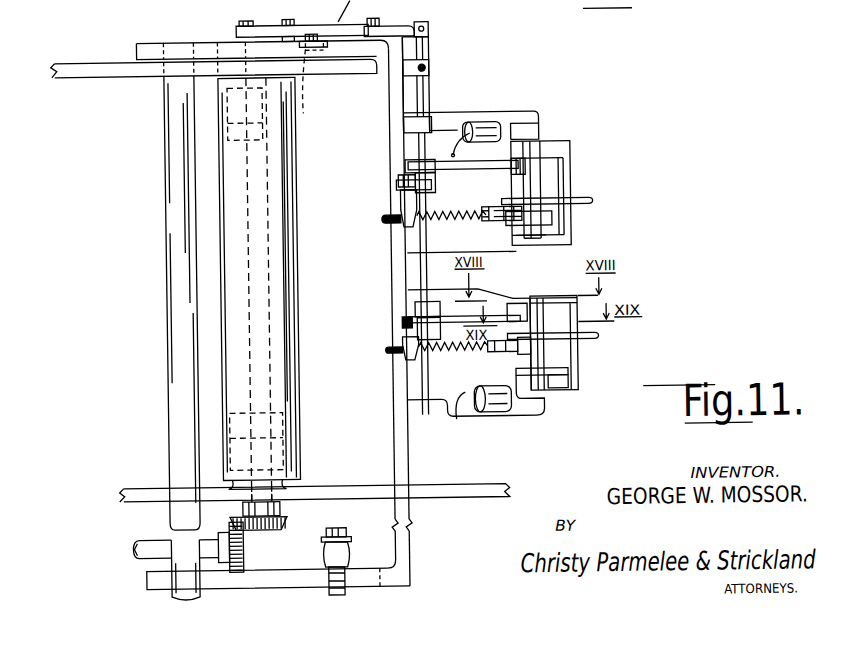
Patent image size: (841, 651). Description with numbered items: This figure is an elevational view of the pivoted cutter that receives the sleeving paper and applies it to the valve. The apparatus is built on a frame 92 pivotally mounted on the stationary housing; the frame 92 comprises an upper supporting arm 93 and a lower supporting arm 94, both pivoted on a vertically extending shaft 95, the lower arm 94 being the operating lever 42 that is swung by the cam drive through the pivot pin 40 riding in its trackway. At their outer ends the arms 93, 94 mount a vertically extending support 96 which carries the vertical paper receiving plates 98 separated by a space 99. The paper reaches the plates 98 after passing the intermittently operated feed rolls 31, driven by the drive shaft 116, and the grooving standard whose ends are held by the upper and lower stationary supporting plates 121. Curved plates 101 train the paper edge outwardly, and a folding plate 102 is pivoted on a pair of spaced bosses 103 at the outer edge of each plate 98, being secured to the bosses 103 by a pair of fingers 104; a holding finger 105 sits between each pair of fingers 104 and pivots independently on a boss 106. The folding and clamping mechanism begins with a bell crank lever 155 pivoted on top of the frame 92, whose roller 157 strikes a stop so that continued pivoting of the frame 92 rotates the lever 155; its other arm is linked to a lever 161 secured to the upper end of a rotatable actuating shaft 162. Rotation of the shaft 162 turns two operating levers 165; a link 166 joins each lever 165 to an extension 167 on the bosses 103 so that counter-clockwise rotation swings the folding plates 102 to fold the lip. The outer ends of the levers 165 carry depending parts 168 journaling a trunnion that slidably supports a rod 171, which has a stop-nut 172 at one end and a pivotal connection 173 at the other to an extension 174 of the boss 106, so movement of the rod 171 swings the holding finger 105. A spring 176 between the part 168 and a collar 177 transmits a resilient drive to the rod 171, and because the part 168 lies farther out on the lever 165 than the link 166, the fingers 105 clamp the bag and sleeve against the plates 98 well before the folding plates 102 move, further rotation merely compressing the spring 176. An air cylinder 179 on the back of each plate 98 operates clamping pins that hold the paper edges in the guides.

The feed rolls 31 is at (284, 226).
The pivot pin 40 is at (340, 548).
The lever 42 is at (278, 578).
The frame 92 is at (229, 41).
The upper supporting arm 93 is at (340, 49).
The lower supporting arm 94 is at (258, 574).
The shaft 95 is at (178, 307).
The support 96 is at (393, 310).
The paper receiving plates 98 is at (446, 131).
The space 99 is at (560, 274).
The curved plates 101 is at (536, 135).
The folding plate 102 is at (567, 150).
The bosses 103 is at (580, 160).
The fingers 104 is at (573, 287).
The holding finger 105 is at (592, 204).
The boss 106 is at (542, 194).
The drive shaft 116 is at (138, 553).
The supporting plates 121 is at (106, 70).
The bell crank lever 155 is at (266, 5).
The roller 157 is at (317, 88).
The lever 161 is at (408, 25).
The actuating shaft 162 is at (431, 97).
The operating levers 165 is at (439, 190).
The link 166 is at (469, 166).
The extension 167 is at (519, 174).
The depending parts 168 is at (407, 204).
The rod 171 is at (487, 222).
The stop-nut 172 is at (399, 224).
The pivotal connection 173 is at (548, 217).
The extension 174 is at (512, 210).
The spring 176 is at (450, 223).
The collar 177 is at (491, 229).
The air cylinder 179 is at (490, 131).